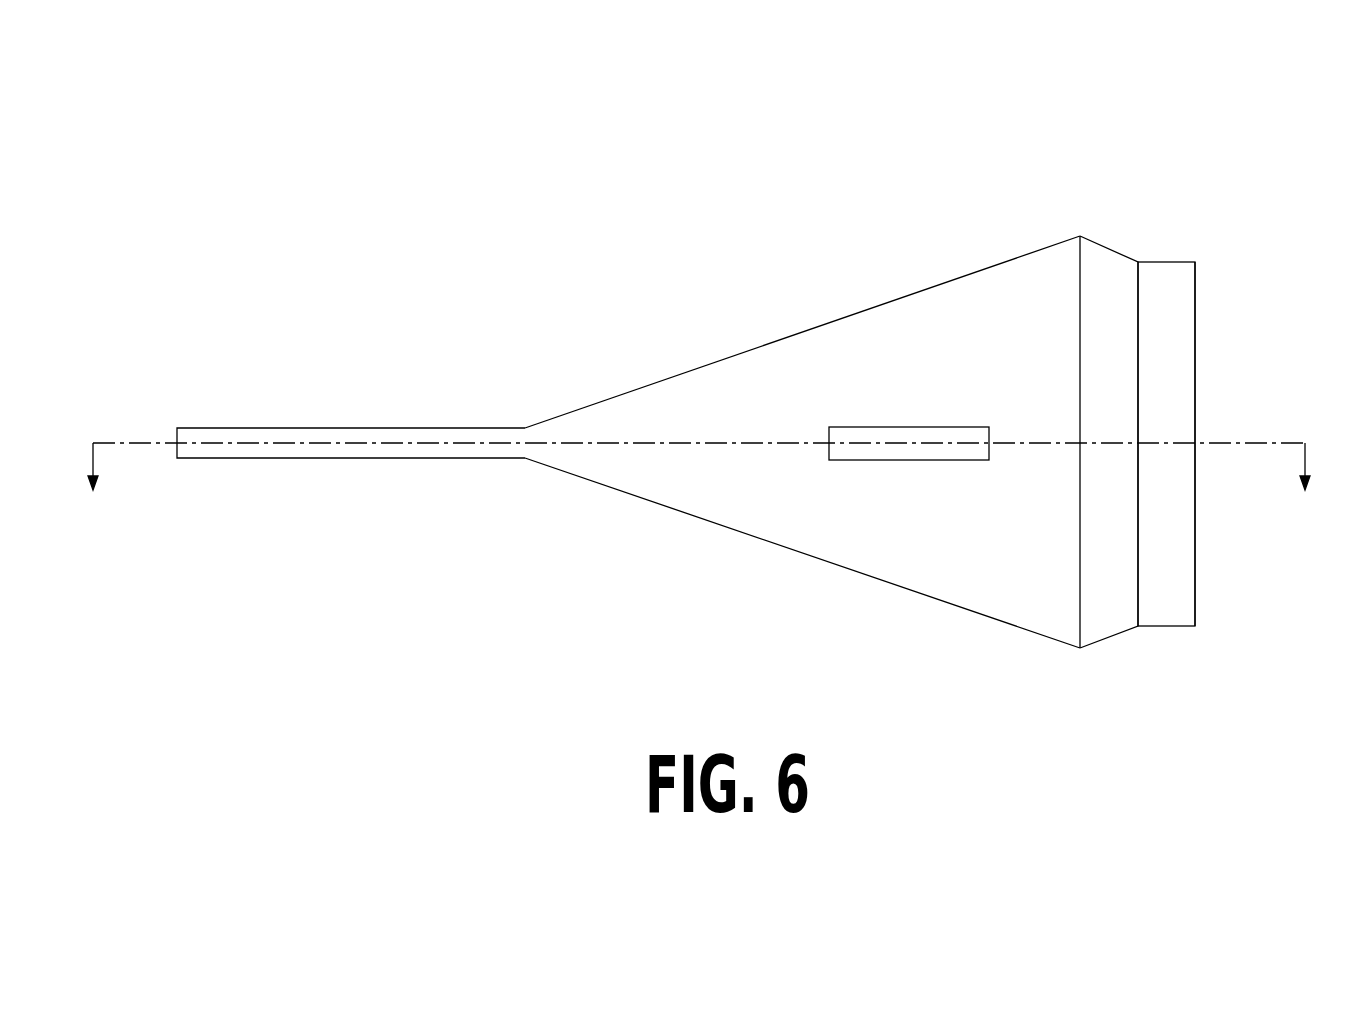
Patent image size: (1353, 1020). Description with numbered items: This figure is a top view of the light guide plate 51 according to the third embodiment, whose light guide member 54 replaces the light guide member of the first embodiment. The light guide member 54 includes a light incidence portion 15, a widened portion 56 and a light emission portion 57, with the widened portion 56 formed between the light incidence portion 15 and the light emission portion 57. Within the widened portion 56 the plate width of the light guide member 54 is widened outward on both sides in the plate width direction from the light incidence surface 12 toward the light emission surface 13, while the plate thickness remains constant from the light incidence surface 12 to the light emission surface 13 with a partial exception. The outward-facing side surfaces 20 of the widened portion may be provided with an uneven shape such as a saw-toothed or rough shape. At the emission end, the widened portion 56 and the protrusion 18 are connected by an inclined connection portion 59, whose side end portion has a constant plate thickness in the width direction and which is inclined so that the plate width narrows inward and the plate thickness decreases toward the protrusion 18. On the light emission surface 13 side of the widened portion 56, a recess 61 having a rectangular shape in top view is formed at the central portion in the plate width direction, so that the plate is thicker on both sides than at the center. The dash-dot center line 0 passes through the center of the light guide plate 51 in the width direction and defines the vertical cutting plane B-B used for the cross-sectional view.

The center line 0 is at (805, 443).
The light incidence surface 12 is at (175, 427).
The light emission surface 13 is at (1196, 330).
The light incidence portion 15 is at (600, 378).
The protrusion 18 is at (1168, 275).
The side surfaces 20 is at (713, 363).
The light guide plate 51 is at (707, 350).
The light guide member 54 is at (657, 350).
The widened portion 56 is at (1017, 275).
The light emission portion 57 is at (1137, 378).
The inclined connection portion 59 is at (1112, 265).
The recess 61 is at (930, 437).